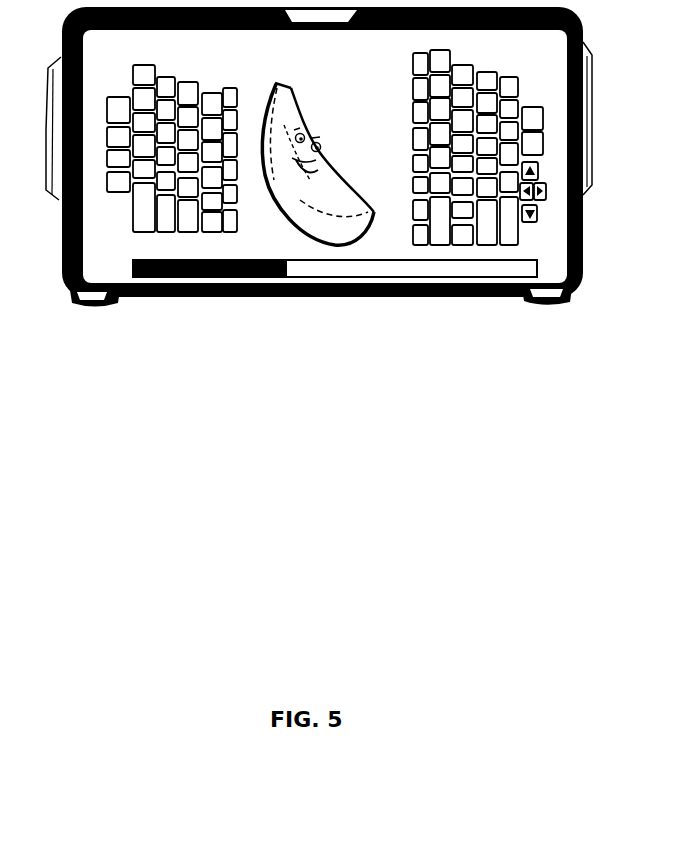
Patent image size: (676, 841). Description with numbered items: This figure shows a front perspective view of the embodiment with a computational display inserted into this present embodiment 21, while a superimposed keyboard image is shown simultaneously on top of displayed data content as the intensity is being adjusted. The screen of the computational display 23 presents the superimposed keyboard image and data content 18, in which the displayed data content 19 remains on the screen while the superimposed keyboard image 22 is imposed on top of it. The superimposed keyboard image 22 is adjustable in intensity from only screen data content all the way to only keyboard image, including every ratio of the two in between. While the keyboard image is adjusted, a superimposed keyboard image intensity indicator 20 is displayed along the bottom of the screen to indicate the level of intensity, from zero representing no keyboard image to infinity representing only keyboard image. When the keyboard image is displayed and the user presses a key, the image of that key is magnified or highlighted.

The superimposed keyboard image and data content 18 is at (261, 78).
The displayed data content 19 is at (283, 124).
The superimposed keyboard image intensity indicator 20 is at (360, 267).
The computational display inserted into this present embodiment 21 is at (333, 311).
The superimposed keyboard image 22 is at (487, 105).
The computational display 23 is at (187, 32).